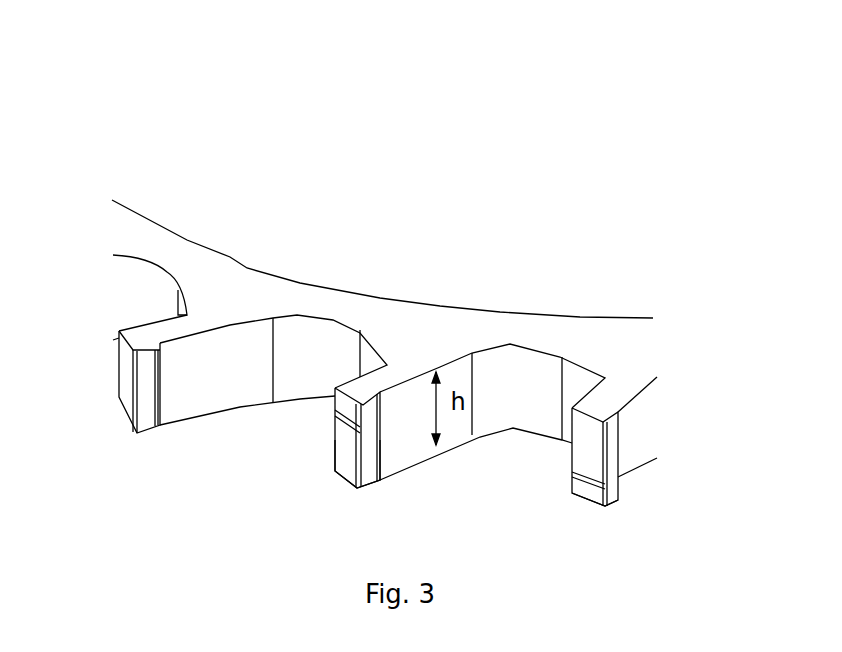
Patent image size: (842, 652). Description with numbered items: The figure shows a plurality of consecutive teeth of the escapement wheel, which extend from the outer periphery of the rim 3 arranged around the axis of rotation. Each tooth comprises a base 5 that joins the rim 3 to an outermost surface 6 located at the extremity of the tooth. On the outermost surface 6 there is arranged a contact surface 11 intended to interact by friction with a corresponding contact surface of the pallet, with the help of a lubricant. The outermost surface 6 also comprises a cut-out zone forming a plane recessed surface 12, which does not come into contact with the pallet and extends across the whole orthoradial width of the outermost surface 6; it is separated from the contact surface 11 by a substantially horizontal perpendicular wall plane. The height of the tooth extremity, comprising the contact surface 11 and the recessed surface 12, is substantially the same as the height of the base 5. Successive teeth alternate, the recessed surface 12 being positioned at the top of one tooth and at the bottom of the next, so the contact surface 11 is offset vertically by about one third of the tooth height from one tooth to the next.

The rim 3 is at (247, 272).
The base 5 is at (398, 372).
The outermost surface 6 is at (342, 458).
The contact surface 11 is at (581, 460).
The recessed surface 12 is at (588, 492).